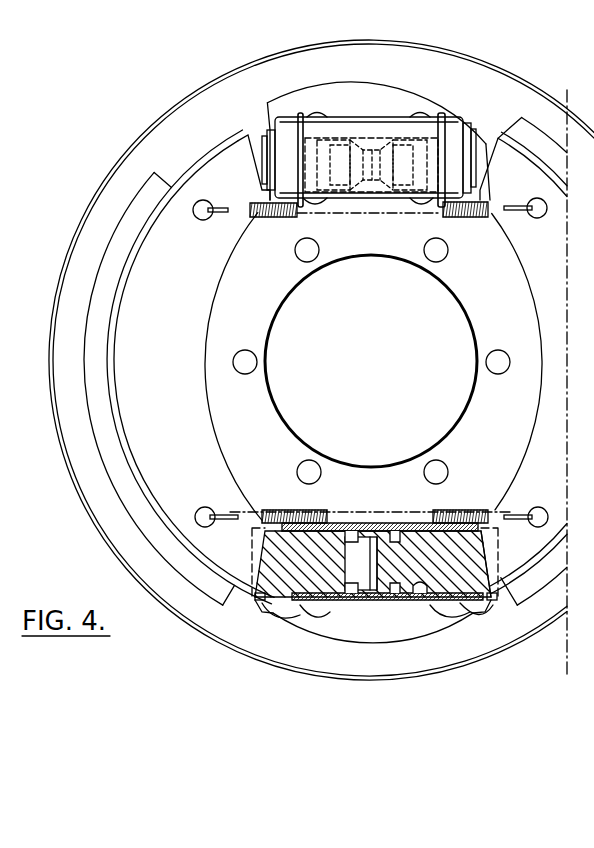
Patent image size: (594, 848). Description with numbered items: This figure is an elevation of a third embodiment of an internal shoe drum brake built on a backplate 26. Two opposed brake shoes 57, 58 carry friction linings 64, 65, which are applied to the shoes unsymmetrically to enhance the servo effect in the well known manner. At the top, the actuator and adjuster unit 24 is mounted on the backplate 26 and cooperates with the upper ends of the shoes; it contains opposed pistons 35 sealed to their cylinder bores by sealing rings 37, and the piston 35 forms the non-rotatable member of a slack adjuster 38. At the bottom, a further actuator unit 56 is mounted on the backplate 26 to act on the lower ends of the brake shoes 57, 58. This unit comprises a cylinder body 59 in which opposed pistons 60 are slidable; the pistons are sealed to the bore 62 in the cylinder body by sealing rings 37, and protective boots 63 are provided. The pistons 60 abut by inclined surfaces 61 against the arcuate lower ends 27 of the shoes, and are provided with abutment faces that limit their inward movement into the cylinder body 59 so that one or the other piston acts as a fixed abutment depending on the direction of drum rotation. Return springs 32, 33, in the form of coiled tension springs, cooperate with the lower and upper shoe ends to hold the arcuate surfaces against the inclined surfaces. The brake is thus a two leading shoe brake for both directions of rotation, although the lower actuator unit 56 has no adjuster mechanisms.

The actuator and adjuster unit 24 is at (463, 116).
The backplate 26 is at (224, 123).
The arcuate surface 27 is at (273, 520).
The return spring 32 is at (315, 507).
The return spring 33 is at (272, 220).
The piston 35 is at (312, 100).
The sealing ring 37 is at (350, 532).
The slack adjuster 38 is at (340, 124).
The actuator unit 56 is at (366, 610).
The brake shoe 57 is at (147, 455).
The brake shoe 58 is at (545, 415).
The cylinder body 59 is at (338, 603).
The piston 60 is at (327, 547).
The inclined surface 61 is at (253, 594).
The bore 62 is at (413, 606).
The protective boot 63 is at (313, 630).
The lining 64 is at (135, 505).
The lining 65 is at (530, 140).